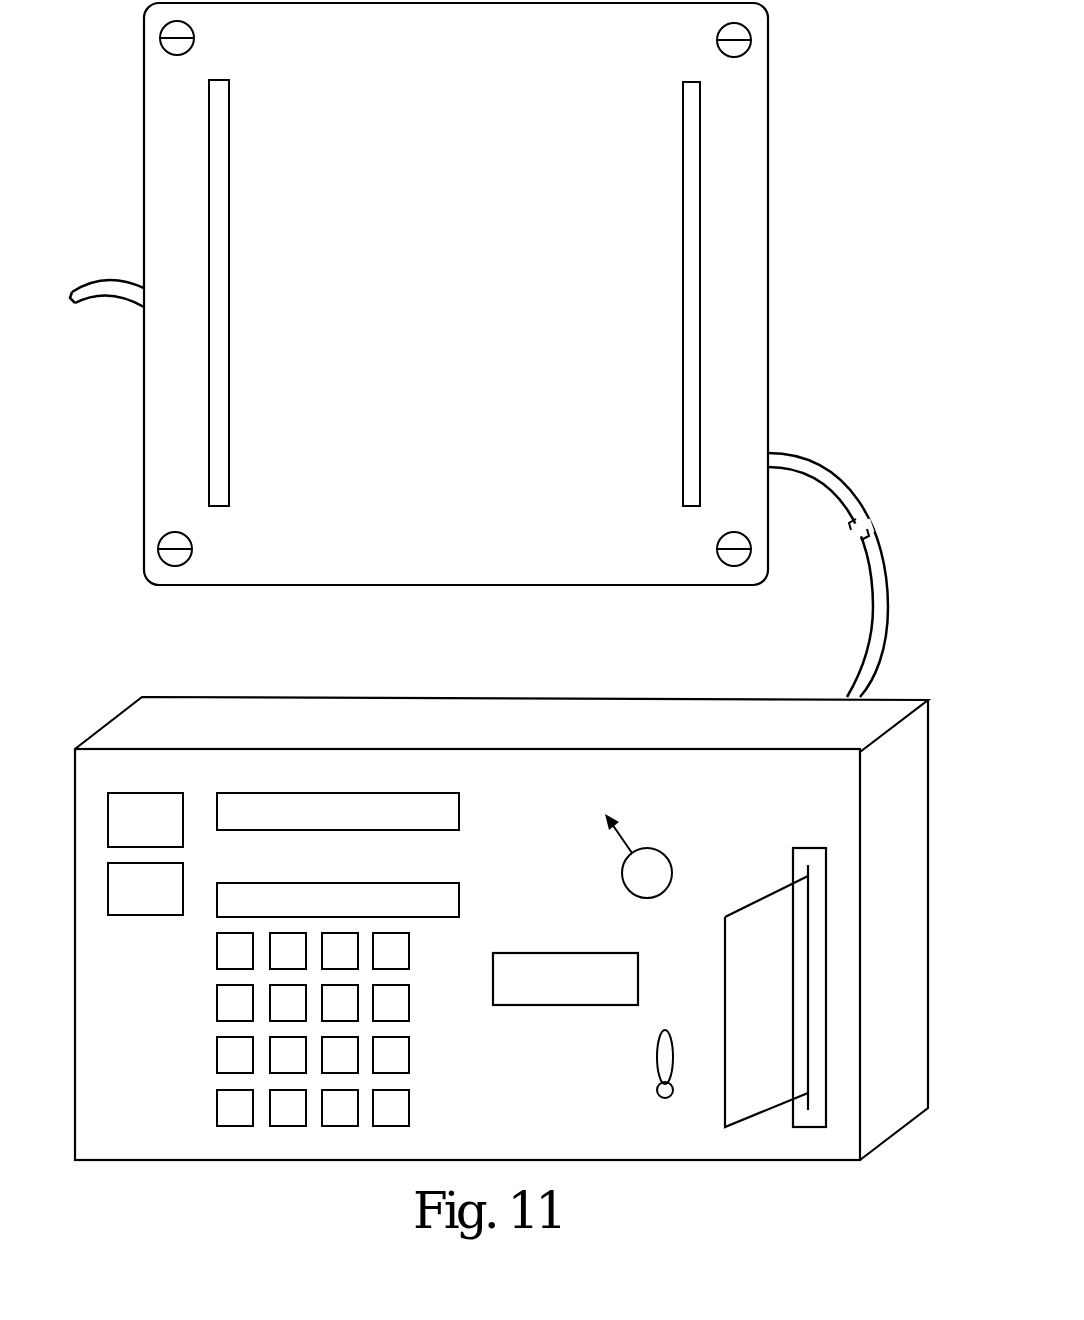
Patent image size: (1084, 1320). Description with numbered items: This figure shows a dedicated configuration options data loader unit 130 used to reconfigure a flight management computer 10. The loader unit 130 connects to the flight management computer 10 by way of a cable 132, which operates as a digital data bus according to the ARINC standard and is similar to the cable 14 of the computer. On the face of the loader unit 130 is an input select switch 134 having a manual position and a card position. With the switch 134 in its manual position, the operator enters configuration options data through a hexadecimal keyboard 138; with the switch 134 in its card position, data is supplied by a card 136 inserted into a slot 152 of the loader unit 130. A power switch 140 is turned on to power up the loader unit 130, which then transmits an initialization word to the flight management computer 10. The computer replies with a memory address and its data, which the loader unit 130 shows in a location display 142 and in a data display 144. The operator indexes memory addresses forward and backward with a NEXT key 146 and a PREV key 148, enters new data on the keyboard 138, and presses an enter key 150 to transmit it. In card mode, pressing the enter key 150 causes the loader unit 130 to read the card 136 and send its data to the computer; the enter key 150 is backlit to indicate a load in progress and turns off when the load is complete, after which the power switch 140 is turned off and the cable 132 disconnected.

The flight management computer 10 is at (768, 190).
The cable 14 is at (108, 278).
The dedicated loader unit 130 is at (481, 698).
The cable 132 is at (830, 487).
The input select switch 134 is at (672, 873).
The card 136 is at (725, 1000).
The hexadecimal keyboard 138 is at (188, 1041).
The power switch 140 is at (675, 1100).
The location display 142 is at (459, 830).
The data display 144 is at (459, 900).
The NEXT key 146 is at (170, 793).
The PREV key 148 is at (172, 915).
The enter key 150 is at (540, 1005).
The slot 152 is at (808, 876).